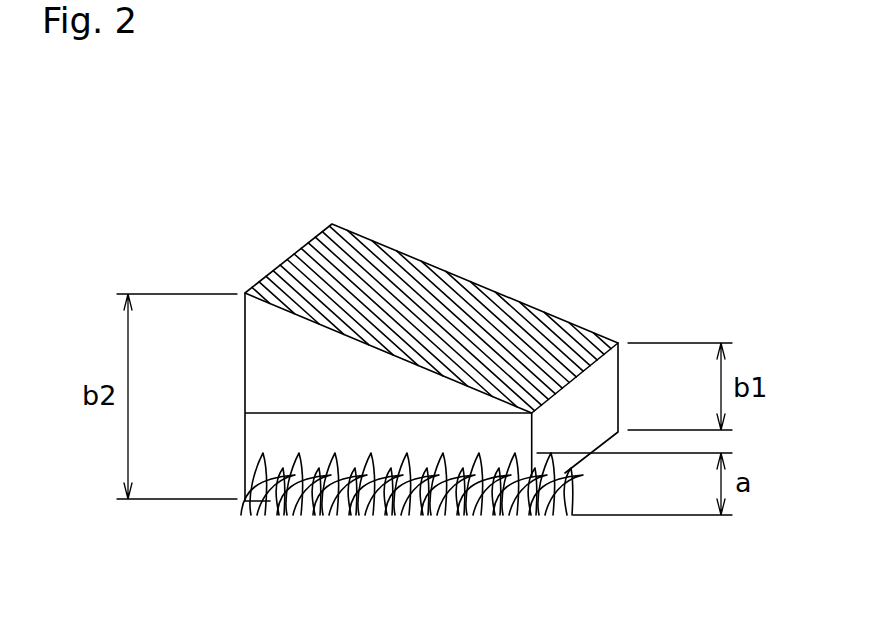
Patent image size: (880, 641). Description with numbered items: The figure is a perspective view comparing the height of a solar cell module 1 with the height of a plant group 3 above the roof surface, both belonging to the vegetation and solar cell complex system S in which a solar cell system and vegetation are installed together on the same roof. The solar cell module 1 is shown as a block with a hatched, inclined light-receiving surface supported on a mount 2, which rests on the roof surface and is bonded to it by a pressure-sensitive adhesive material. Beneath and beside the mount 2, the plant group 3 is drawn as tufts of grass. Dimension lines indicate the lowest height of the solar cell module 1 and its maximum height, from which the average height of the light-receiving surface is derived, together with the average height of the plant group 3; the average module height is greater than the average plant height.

The solar cell module 1 is at (430, 269).
The mount 2 is at (245, 366).
The plant group 3 is at (380, 505).
The vegetation and solar cell complex system S is at (597, 228).